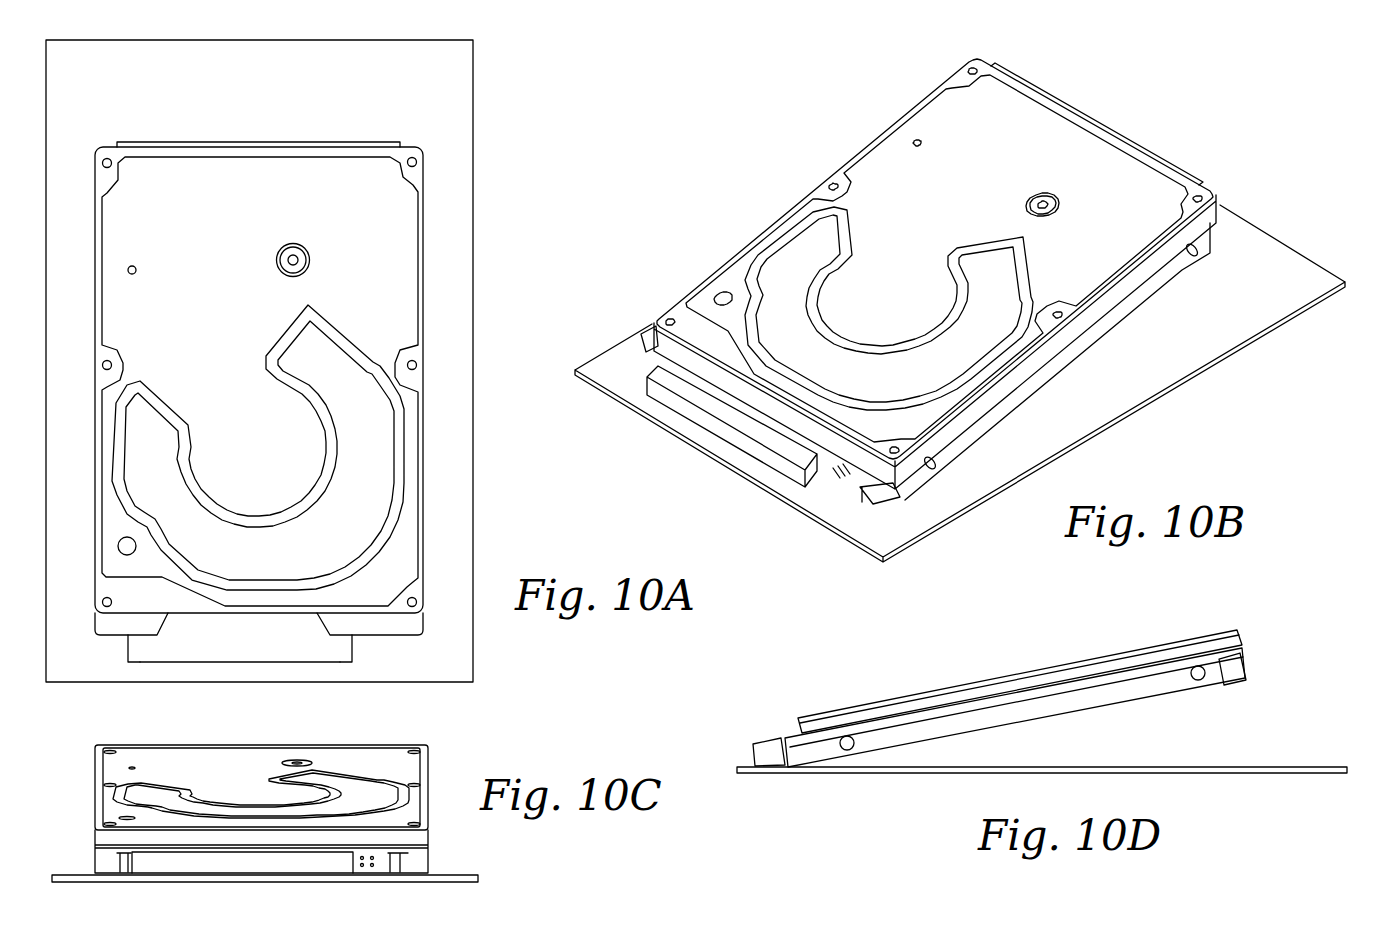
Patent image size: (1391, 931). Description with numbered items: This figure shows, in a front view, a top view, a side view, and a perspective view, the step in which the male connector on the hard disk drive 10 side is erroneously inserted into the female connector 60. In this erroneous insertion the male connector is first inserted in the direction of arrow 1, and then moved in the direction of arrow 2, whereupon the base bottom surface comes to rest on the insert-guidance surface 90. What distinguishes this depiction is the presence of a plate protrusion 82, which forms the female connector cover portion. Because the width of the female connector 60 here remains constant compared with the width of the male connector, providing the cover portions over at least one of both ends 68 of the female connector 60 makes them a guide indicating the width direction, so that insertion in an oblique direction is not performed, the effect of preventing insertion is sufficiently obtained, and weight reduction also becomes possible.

In FIG. 10B, the hard disk drive 10 is at (1182, 120).
In FIG. 10A, the female connector 60 is at (255, 653).
In FIG. 10B, the female connector 60 is at (730, 408).
In FIG. 10A, the ends of the female connector 68 is at (143, 652).
In FIG. 10A, the plate protrusion 82 is at (112, 625).
In FIG. 10B, the plate protrusion 82 is at (651, 334).
In FIG. 10A, the insert-guidance surface 90 is at (463, 173).
In FIG. 10B, the insert-guidance surface 90 is at (1135, 380).
In FIG. 10C, the insert-guidance surface 90 is at (455, 875).
In FIG. 10D, the insert-guidance surface 90 is at (873, 773).
In FIG. 10D, the arrow 1 is at (925, 655).
In FIG. 10D, the arrow 2 is at (1297, 650).